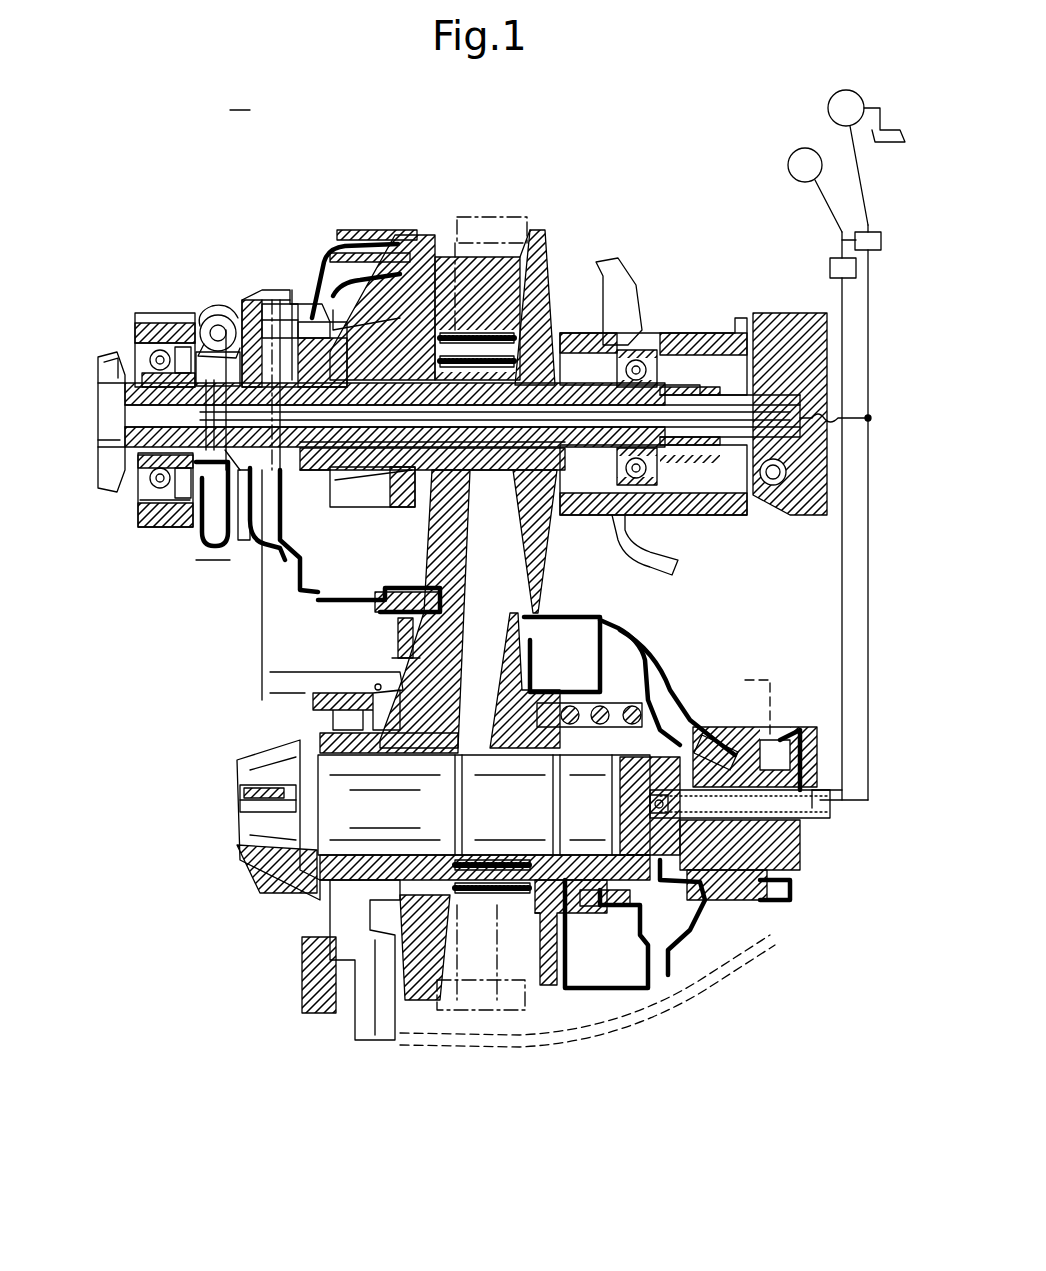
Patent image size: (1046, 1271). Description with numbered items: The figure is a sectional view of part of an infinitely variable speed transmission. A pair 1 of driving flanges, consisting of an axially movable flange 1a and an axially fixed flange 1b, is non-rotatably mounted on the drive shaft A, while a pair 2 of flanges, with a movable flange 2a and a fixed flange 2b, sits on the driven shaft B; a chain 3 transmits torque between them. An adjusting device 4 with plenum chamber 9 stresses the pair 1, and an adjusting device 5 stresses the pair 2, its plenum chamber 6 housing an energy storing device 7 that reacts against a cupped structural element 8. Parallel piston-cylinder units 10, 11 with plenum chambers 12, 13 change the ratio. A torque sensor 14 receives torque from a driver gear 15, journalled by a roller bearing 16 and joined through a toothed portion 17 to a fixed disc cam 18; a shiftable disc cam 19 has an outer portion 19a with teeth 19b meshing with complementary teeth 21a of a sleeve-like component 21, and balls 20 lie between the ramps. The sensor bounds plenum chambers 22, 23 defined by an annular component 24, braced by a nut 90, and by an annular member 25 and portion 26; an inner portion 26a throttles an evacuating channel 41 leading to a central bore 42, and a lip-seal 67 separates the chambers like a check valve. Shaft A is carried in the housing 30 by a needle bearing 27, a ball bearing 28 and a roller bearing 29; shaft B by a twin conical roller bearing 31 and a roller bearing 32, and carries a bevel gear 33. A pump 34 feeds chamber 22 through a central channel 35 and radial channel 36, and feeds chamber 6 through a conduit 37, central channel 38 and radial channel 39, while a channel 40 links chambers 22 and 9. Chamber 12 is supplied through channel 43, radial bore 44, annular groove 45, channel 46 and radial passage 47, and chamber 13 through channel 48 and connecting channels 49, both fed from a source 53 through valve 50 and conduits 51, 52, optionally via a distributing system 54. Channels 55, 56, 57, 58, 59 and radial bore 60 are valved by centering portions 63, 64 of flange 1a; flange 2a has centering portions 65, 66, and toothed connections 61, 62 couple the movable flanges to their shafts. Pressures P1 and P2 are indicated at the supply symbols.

The pair of driving flanges 1 is at (478, 606).
The axially movable flange 1a is at (410, 300).
The axially fixed flange 1b is at (540, 248).
The pair of flanges 2 is at (490, 1002).
The axially movable flange 2a is at (535, 912).
The axially fixed flange 2b is at (428, 963).
The chain 3 is at (462, 880).
The adjusting device 4 is at (342, 600).
The adjusting device 5 is at (622, 700).
The plenum chamber 6 is at (748, 690).
The energy storing device 7 is at (662, 712).
The cupped structural element 8 is at (653, 945).
The plenum chamber 9 is at (406, 604).
The piston-cylinder unit 10 is at (240, 102).
The piston-cylinder unit 11 is at (604, 612).
The plenum chamber 12 is at (318, 756).
The plenum chamber 13 is at (563, 640).
The torque sensor 14 is at (198, 596).
The driver gear 15 is at (152, 352).
The roller bearing 16 is at (142, 325).
The toothed portion 17 is at (180, 500).
The disc cam 18 is at (214, 355).
The disc cam 19 is at (230, 328).
The radially outer portion 19a is at (280, 298).
The teeth 19b is at (262, 700).
The balls 20 is at (224, 305).
The sleeve-like component 21 is at (370, 230).
The complementary teeth 21a is at (293, 288).
The plenum chamber 22 is at (258, 300).
The plenum chamber 23 is at (304, 300).
The annular component 24 is at (342, 252).
The annular member 25 is at (250, 300).
The portion 26 is at (200, 330).
The inner portion 26a is at (210, 318).
The needle bearing 27 is at (104, 360).
The ball bearing 28 is at (632, 360).
The roller bearing 29 is at (616, 290).
The housing 30 is at (600, 334).
The twin conical roller bearing 31 is at (740, 900).
The roller bearing 32 is at (292, 868).
The bevel gear 33 is at (275, 802).
The pump 34 is at (843, 91).
The central channel 35 is at (660, 412).
The radial channel 36 is at (215, 548).
The conduit 37 is at (866, 802).
The central channel 38 is at (814, 810).
The radial channel 39 is at (690, 925).
The channel 40 is at (275, 298).
The evacuating channel 41 is at (142, 518).
The central bore 42 is at (100, 445).
The channel 43 is at (578, 460).
The radial bore 44 is at (318, 470).
The annular groove 45 is at (262, 560).
The channel 46 is at (360, 340).
The radial passage 47 is at (320, 285).
The channel 48 is at (784, 896).
The connecting channels 49 is at (755, 725).
The valve 50 is at (834, 264).
The connecting conduit 51 is at (772, 360).
The connecting conduit 52 is at (842, 576).
The source of pressurized fluid 53 is at (802, 162).
The volume- or pressure-distributing system 54 is at (858, 232).
The channel 55 is at (292, 560).
The channel 56 is at (226, 560).
The channel 57 is at (461, 262).
The channel 58 is at (546, 332).
The channel 59 is at (472, 332).
The radial bore 60 is at (500, 356).
The toothed connection 61 is at (402, 508).
The toothed connection 62 is at (530, 762).
The centering portion 63 is at (358, 505).
The centering portion 64 is at (496, 346).
The centering portion 65 is at (546, 772).
The centering portion 66 is at (720, 690).
The lip-seal 67 is at (264, 548).
The nut 90 is at (112, 430).
The drive shaft A is at (165, 505).
The driven shaft B is at (335, 775).
The pressure P1 is at (866, 116).
The pressure P2 is at (792, 158).